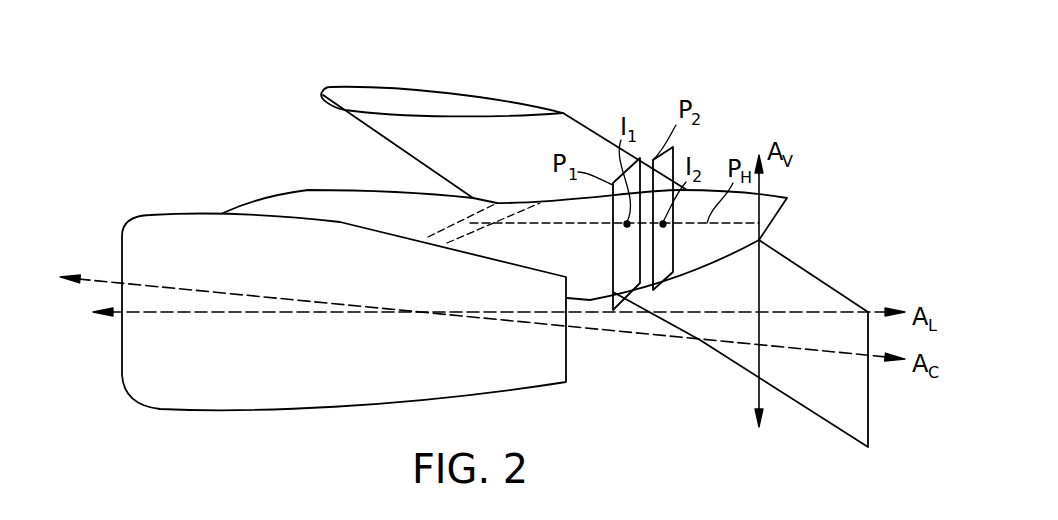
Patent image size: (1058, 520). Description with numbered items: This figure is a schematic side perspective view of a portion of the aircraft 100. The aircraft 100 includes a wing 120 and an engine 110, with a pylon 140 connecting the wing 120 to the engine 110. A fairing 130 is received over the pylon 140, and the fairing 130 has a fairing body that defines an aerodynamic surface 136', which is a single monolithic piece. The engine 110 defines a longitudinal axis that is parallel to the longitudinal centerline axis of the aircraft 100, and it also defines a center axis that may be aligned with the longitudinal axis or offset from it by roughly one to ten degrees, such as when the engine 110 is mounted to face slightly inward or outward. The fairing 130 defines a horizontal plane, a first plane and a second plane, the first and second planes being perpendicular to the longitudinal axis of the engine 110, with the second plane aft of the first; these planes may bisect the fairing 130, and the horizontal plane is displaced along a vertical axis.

The aircraft 100 is at (731, 128).
The engine 110 is at (553, 385).
The wing 120 is at (810, 270).
The fairing 130 is at (308, 190).
The pylon 140 is at (493, 203).
The aerodynamic surface 136' is at (562, 251).